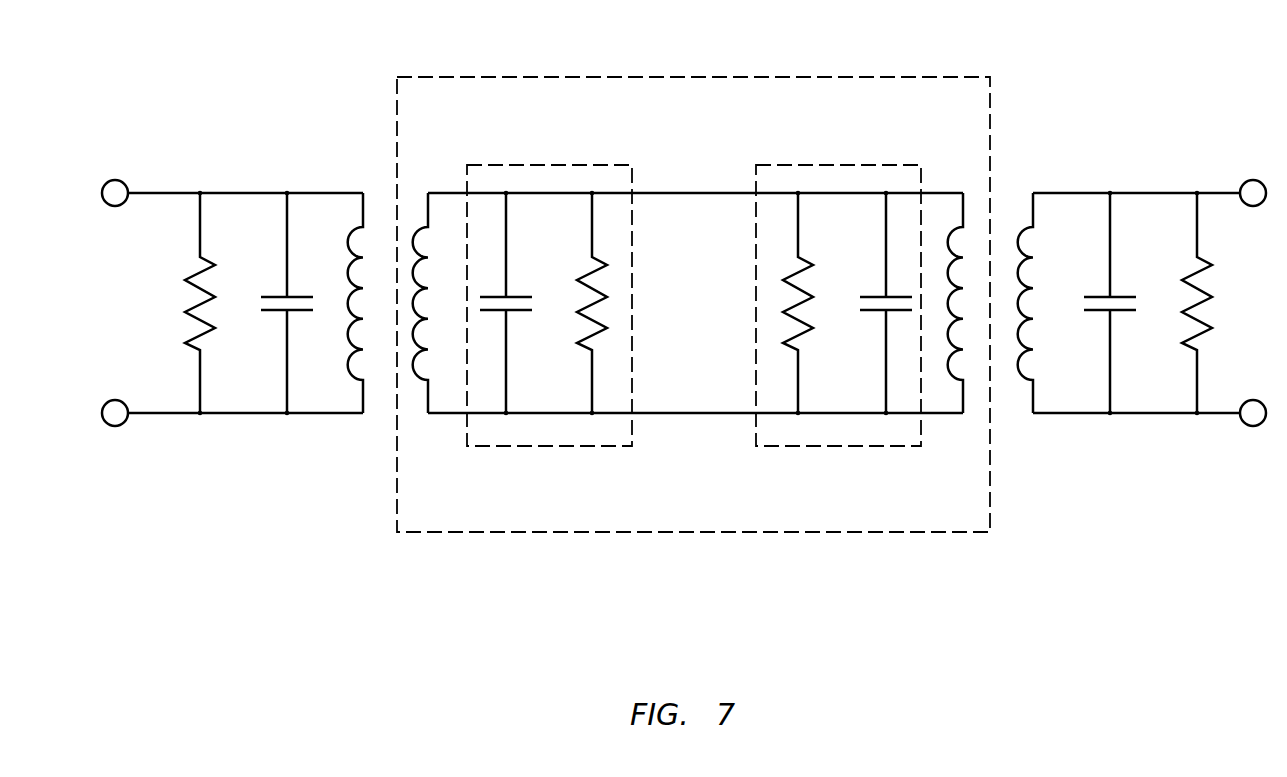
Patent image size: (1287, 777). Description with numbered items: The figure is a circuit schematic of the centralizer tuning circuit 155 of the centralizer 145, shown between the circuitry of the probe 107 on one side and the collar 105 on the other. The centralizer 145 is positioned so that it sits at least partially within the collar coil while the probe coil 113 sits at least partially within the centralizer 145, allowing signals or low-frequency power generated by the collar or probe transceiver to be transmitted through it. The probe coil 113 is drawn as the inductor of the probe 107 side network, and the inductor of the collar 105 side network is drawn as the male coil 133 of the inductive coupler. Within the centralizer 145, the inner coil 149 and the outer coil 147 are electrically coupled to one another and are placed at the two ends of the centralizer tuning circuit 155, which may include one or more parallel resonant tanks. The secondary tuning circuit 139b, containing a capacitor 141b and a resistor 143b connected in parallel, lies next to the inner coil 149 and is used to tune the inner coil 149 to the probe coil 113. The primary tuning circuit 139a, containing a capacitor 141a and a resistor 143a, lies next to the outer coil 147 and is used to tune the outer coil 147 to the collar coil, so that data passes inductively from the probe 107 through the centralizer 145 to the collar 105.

The collar 105 is at (1142, 318).
The probe 107 is at (232, 331).
The probe coil 113 is at (348, 229).
The male coil 133 is at (1023, 230).
The primary tuning circuit 139a is at (849, 307).
The secondary tuning circuit 139b is at (565, 305).
The capacitor 141a is at (898, 294).
The capacitor 141b is at (518, 294).
The resistor 143a is at (805, 258).
The resistor 143b is at (598, 258).
The centralizer 145 is at (693, 331).
The outer coil 147 is at (950, 228).
The inner coil 149 is at (415, 230).
The centralizer tuning circuit 155 is at (735, 77).